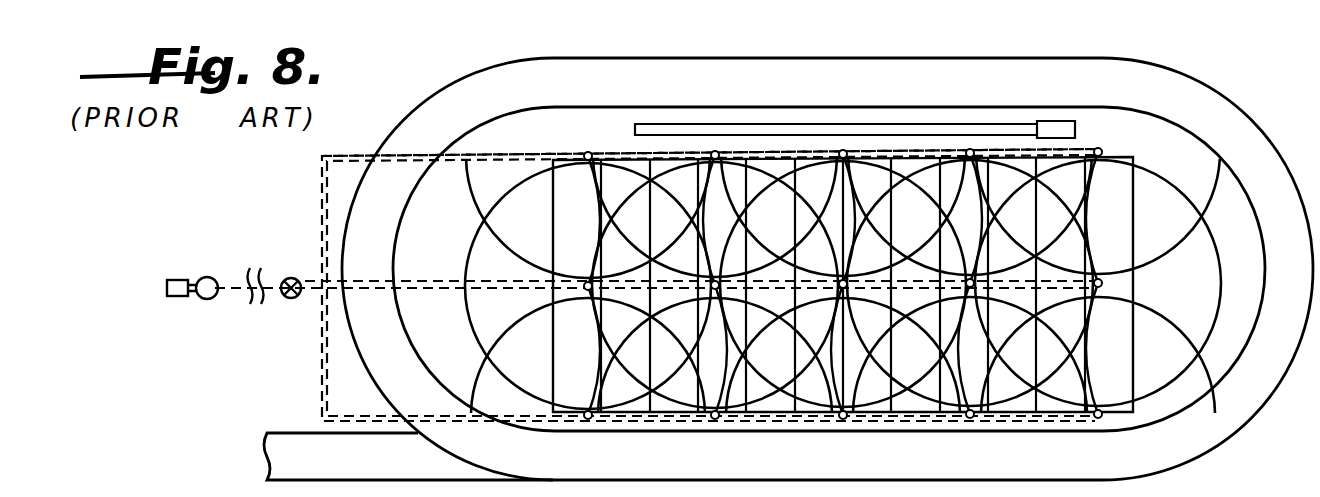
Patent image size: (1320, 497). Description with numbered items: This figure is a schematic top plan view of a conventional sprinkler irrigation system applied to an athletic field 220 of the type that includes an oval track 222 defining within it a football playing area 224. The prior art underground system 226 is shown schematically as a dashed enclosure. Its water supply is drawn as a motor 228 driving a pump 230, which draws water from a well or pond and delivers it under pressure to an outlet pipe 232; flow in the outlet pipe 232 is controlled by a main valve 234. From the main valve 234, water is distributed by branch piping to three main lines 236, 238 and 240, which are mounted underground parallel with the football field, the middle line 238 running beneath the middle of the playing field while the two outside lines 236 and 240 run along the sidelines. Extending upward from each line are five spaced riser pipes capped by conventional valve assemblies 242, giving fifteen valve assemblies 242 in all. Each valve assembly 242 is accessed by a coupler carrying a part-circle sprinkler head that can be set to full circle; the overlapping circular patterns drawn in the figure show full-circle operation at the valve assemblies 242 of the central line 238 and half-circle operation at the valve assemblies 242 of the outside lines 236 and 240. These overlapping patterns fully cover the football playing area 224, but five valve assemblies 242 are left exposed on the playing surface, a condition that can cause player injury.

The athletic field 220 is at (1208, 81).
The oval track 222 is at (760, 62).
The football playing area 224 is at (480, 220).
The underground system 226 is at (321, 325).
The motor 228 is at (177, 298).
The pump 230 is at (213, 277).
The outlet pipe 232 is at (236, 280).
The main valve 234 is at (294, 277).
The main line 236 is at (398, 153).
The middle line 238 is at (440, 265).
The main line 240 is at (436, 424).
The valve assemblies 242 is at (592, 128).